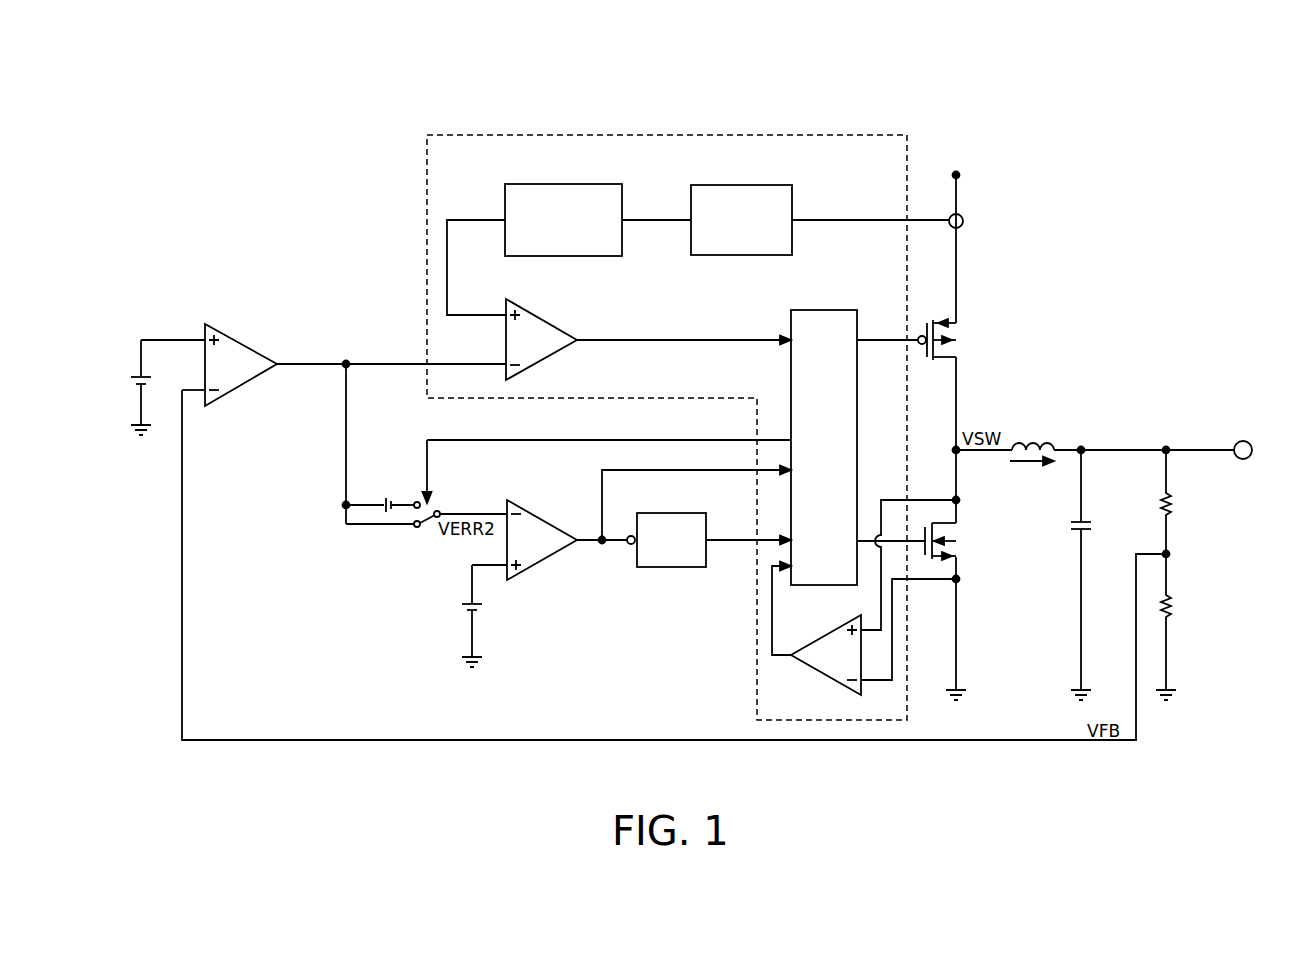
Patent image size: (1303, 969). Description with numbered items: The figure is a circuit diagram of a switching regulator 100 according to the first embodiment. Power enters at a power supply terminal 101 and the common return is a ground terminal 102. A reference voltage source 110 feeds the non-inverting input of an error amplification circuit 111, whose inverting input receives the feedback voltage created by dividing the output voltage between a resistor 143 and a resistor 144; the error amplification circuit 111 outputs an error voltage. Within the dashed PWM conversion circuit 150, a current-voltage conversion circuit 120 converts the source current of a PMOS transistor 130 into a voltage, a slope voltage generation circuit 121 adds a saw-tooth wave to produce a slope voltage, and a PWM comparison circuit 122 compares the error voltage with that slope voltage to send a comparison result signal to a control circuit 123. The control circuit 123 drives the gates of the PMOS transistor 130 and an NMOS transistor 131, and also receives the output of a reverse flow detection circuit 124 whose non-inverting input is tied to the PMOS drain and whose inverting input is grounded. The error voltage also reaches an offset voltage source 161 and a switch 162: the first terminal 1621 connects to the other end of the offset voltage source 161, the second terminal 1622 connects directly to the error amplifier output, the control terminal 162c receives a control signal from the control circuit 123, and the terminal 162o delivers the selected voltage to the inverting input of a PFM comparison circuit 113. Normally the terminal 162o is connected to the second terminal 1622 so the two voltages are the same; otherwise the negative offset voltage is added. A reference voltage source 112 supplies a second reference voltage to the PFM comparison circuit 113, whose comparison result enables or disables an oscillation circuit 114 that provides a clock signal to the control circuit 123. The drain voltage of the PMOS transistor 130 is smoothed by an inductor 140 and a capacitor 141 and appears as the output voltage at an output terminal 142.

The switching regulator 100 is at (337, 193).
The power supply terminal 101 is at (960, 176).
The ground terminal 102 is at (963, 690).
The reference voltage source 110 is at (151, 378).
The error amplification circuit 111 is at (241, 343).
The reference voltage source 112 is at (481, 606).
The PFM comparison circuit 113 is at (541, 519).
The oscillation circuit 114 is at (683, 513).
The current-voltage conversion circuit 120 is at (740, 185).
The slope voltage generation circuit 121 is at (578, 184).
The PWM comparison circuit 122 is at (548, 322).
The control circuit 123 is at (828, 310).
The reverse flow detection circuit 124 is at (828, 679).
The PMOS transistor 130 is at (952, 352).
The NMOS transistor 131 is at (957, 557).
The inductor 140 is at (1043, 443).
The capacitor 141 is at (1087, 521).
The output terminal 142 is at (1247, 442).
The resistor 143 is at (1170, 497).
The resistor 144 is at (1170, 597).
The PWM conversion circuit 150 is at (843, 135).
The offset voltage source 161 is at (346, 504).
The switch 162 is at (426, 516).
The first terminal 1621 is at (418, 500).
The second terminal 1622 is at (416, 528).
The control terminal 162c is at (432, 500).
The terminal 162o is at (437, 518).